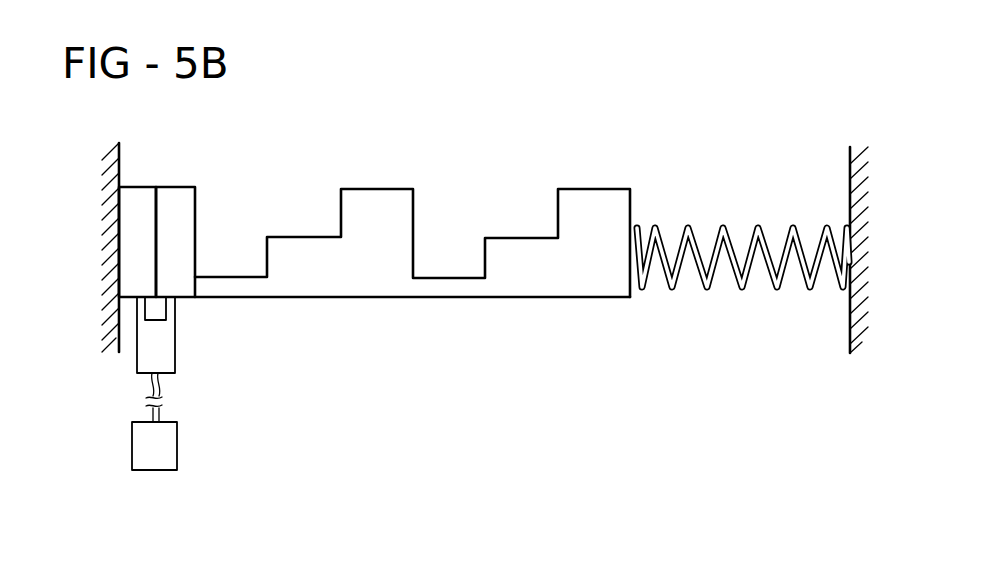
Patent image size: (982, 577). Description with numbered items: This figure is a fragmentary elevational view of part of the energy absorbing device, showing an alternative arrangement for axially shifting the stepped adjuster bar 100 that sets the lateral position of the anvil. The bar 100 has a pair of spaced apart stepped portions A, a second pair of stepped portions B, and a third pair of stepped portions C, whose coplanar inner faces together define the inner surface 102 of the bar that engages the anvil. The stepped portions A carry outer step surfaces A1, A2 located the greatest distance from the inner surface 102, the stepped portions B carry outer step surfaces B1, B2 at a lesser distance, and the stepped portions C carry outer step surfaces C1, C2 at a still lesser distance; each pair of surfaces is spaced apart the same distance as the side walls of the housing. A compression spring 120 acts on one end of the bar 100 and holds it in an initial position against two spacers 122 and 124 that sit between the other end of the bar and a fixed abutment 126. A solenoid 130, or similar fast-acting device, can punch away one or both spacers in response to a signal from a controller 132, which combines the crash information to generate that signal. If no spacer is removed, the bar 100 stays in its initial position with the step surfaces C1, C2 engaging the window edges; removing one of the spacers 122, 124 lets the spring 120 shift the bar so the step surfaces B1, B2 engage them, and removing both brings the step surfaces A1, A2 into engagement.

The adjuster bar 100 is at (566, 306).
The inner surface of the bar 102 is at (230, 298).
The compression spring 120 is at (727, 228).
The spacer 122 is at (149, 189).
The spacer 124 is at (188, 188).
The fixed abutment 126 is at (122, 231).
The solenoid 130 is at (145, 358).
The controller 132 is at (168, 447).
The stepped portions A is at (376, 238).
The stepped portions B is at (308, 272).
The stepped portions C is at (248, 280).
The outer step surface A1 is at (596, 189).
The outer step surface B1 is at (520, 238).
The outer step surface C1 is at (460, 278).
The outer step surface A2 is at (388, 189).
The outer step surface B2 is at (313, 237).
The outer step surface C2 is at (243, 277).